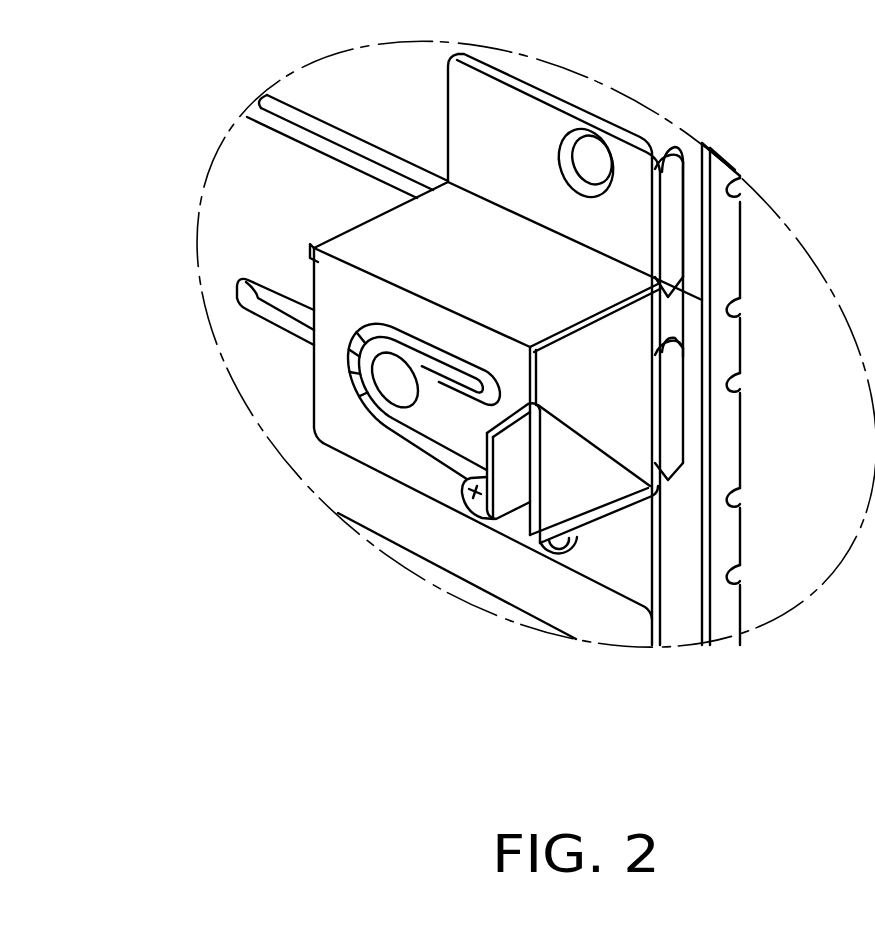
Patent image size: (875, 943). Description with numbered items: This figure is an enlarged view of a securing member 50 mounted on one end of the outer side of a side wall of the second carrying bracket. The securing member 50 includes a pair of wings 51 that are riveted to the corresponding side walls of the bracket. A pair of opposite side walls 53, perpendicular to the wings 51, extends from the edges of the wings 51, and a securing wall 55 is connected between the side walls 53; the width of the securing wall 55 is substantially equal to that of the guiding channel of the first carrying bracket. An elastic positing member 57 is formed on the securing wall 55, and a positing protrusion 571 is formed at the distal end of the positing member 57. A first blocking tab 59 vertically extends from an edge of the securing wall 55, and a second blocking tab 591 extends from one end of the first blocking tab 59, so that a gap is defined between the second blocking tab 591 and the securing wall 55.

The securing member 50 is at (601, 510).
The wings 51 is at (527, 143).
The side walls 53 is at (403, 238).
The securing wall 55 is at (333, 397).
The elastic positing member 57 is at (463, 413).
The positing protrusion 571 is at (392, 385).
The first blocking tab 59 is at (508, 470).
The second blocking tab 591 is at (447, 506).